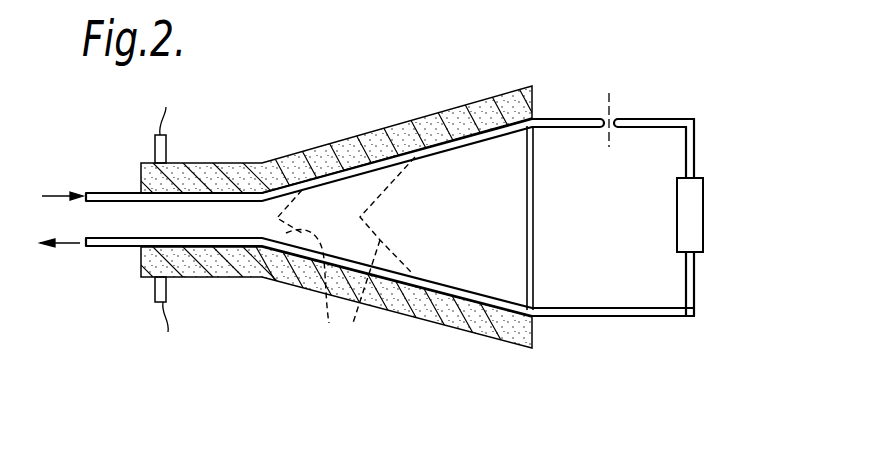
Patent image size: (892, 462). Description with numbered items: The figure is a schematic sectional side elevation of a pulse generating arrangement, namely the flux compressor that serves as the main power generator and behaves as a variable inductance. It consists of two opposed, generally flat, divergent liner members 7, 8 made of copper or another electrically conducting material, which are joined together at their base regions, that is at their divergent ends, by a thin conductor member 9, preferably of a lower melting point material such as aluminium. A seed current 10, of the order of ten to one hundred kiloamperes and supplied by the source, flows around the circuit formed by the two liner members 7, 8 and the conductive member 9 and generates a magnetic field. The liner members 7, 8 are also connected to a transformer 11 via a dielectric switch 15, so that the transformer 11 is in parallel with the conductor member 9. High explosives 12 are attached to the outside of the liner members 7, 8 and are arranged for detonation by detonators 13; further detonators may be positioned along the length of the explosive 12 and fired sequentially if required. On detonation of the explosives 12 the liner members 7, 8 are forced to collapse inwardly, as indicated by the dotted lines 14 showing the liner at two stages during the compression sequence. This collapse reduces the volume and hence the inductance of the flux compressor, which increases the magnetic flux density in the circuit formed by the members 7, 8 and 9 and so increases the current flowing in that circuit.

The liner member 7 is at (458, 142).
The liner member 8 is at (457, 295).
The conductor member 9 is at (537, 273).
The seed current 10 is at (50, 196).
The transformer 11 is at (702, 232).
The high explosives 12 is at (371, 132).
The detonators 13 is at (163, 152).
The dotted lines 14 is at (361, 306).
The dielectric switch 15 is at (615, 117).